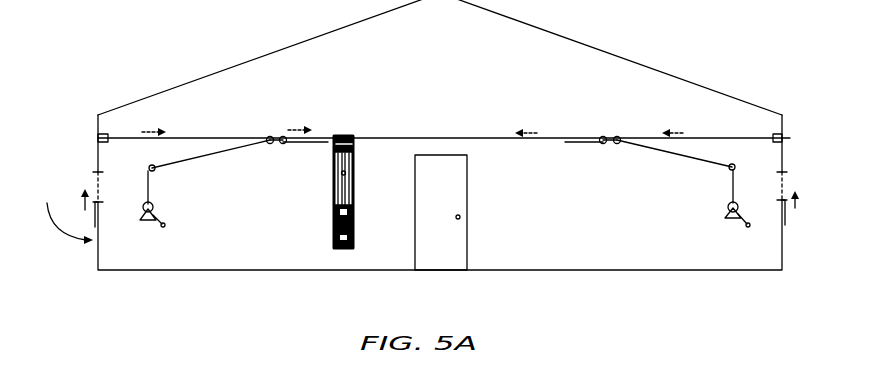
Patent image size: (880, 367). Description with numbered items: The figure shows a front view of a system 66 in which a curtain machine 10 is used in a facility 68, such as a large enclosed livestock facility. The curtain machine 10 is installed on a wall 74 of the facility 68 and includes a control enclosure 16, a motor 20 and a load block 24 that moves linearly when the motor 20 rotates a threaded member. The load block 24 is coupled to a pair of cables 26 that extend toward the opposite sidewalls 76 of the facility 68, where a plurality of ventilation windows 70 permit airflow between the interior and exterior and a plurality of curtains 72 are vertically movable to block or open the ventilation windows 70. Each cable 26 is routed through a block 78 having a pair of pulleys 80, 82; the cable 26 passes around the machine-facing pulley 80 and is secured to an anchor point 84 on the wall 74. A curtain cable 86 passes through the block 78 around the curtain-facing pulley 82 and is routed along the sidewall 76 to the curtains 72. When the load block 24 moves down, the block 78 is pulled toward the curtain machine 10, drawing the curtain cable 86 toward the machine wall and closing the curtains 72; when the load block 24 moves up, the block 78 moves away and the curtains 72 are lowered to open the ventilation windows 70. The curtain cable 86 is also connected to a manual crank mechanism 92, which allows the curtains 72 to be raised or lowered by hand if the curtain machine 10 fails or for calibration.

The curtain machine 10 is at (345, 196).
The control enclosure 16 is at (353, 238).
The motor 20 is at (353, 225).
The load block 24 is at (353, 165).
The cable 26 is at (328, 136).
The system 66 is at (178, 50).
The facility 68 is at (65, 212).
The ventilation window 70 is at (95, 187).
The curtain 72 is at (95, 218).
The wall 74 is at (264, 231).
The sidewall 76 is at (98, 252).
The block 78 is at (270, 136).
The machine-facing pulley 80 is at (283, 144).
The curtain-facing pulley 82 is at (270, 144).
The anchor point 84 is at (327, 143).
The curtain cable 86 is at (212, 136).
The manual crank mechanism 92 is at (158, 213).